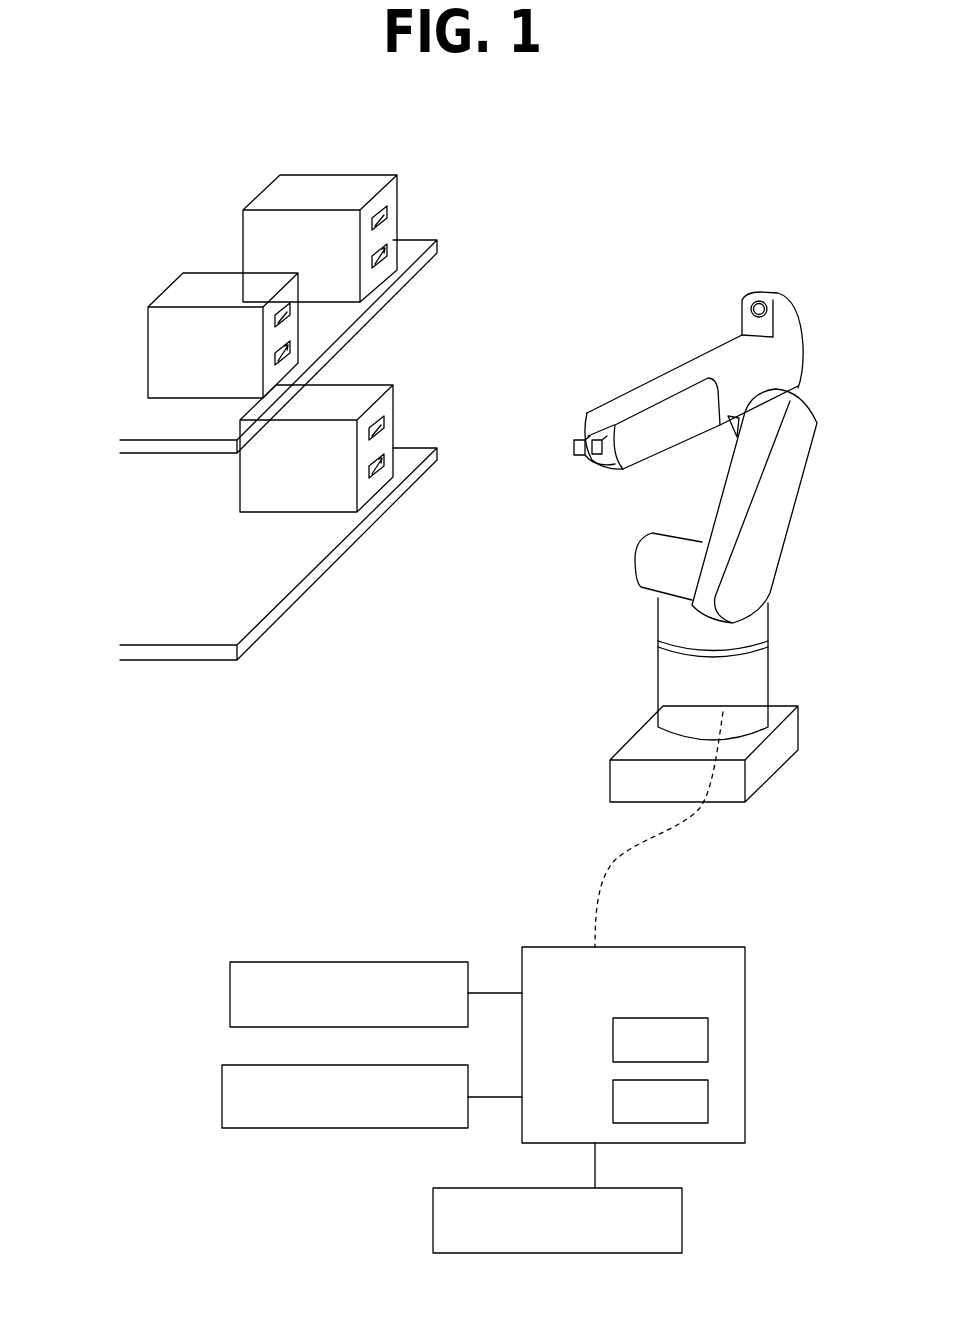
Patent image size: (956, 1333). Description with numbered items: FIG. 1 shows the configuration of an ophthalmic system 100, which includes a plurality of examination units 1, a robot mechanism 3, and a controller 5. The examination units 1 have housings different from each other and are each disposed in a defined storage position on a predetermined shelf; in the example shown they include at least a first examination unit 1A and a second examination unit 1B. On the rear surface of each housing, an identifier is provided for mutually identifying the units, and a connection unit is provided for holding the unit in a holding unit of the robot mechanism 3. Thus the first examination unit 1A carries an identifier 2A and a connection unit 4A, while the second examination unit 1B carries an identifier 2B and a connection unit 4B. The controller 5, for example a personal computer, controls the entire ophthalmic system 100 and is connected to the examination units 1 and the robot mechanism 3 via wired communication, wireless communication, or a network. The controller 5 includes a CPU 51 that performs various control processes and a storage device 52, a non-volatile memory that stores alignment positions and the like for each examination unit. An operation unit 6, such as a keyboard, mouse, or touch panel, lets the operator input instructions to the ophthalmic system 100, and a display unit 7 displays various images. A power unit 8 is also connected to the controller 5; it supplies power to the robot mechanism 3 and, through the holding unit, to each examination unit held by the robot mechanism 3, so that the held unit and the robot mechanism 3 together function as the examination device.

The examination units 1 is at (141, 102).
The first examination unit 1A is at (198, 278).
The second examination unit 1B is at (295, 182).
The identifier 2A is at (288, 348).
The identifier 2B is at (387, 253).
The connection unit 4A is at (277, 318).
The connection unit 4B is at (387, 212).
The ophthalmic system 100 is at (724, 150).
The robot mechanism 3 is at (650, 570).
The controller 5 is at (745, 1103).
The CPU 51 is at (613, 1040).
The storage device (NVM) 52 is at (613, 1105).
The operation unit 6 is at (230, 993).
The display unit 7 is at (222, 1097).
The power unit 8 is at (433, 1226).